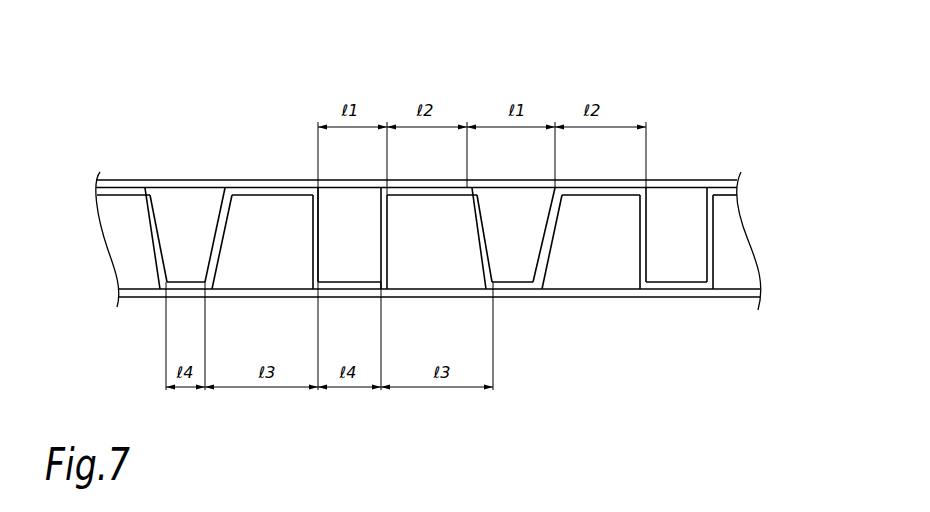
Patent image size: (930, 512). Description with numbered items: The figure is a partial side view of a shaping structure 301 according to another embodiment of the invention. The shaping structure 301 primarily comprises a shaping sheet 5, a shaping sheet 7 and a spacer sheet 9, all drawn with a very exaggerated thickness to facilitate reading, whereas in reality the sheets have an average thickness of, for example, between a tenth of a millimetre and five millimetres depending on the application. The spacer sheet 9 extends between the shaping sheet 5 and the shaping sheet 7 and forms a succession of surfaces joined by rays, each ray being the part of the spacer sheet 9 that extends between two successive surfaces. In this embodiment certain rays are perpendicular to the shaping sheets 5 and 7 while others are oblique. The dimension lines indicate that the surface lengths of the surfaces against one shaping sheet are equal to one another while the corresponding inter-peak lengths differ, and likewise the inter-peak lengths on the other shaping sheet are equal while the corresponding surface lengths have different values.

The shaping structure 301 is at (193, 135).
The shaping sheet 5 is at (687, 180).
The shaping sheet 7 is at (745, 297).
The spacer sheet 9 is at (712, 243).